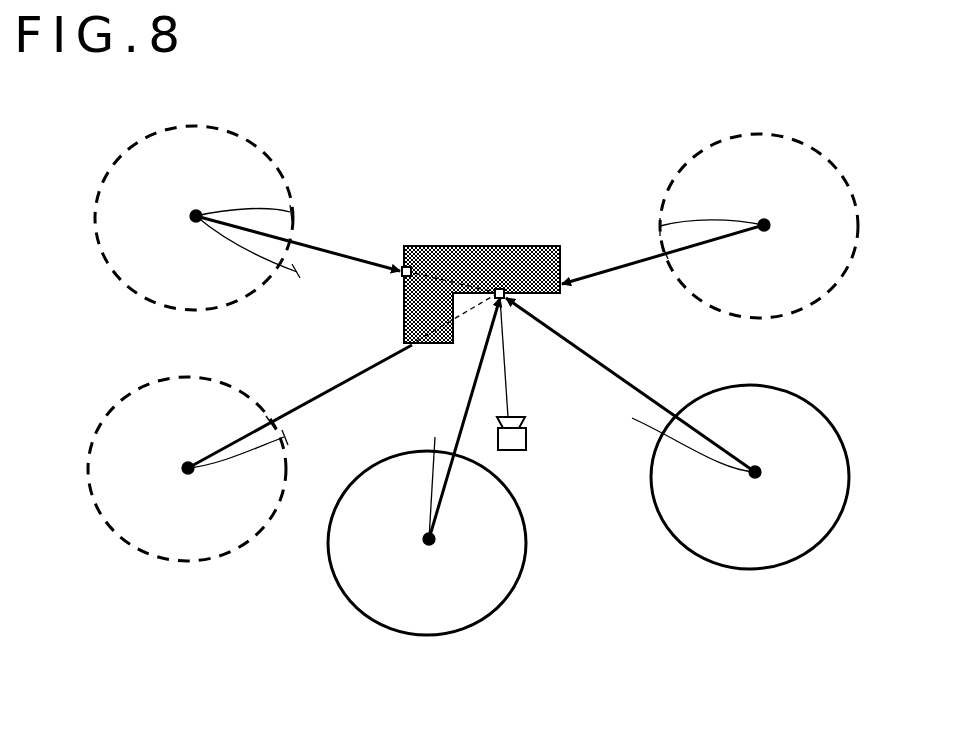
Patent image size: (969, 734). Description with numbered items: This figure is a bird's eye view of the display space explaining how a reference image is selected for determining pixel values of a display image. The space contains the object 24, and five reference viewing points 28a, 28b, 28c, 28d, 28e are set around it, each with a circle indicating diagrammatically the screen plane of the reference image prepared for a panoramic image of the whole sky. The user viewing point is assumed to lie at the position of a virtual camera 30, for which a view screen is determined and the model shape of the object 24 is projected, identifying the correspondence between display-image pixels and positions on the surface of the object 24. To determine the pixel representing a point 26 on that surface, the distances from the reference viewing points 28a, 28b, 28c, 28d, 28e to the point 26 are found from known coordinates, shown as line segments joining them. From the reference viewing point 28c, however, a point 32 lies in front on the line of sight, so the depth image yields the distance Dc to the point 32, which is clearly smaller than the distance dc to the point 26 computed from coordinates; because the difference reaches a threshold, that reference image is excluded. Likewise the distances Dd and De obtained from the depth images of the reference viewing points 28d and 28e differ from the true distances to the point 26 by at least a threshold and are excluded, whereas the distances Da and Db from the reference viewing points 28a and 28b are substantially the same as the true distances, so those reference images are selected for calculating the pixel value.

The object 24 is at (526, 246).
The point on the surface of the object 26 is at (505, 297).
The reference viewing point 28a is at (429, 539).
The reference viewing point 28b is at (755, 472).
The reference viewing point 28c is at (196, 216).
The reference viewing point 28d is at (188, 468).
The reference viewing point 28e is at (764, 225).
The virtual camera 30 is at (527, 437).
The point 32 is at (406, 265).
The distance Da is at (490, 305).
The distance Db is at (503, 300).
The distance Dc is at (400, 268).
The distance Dd is at (412, 350).
The distance De is at (563, 280).
The distance to the point dc is at (404, 296).